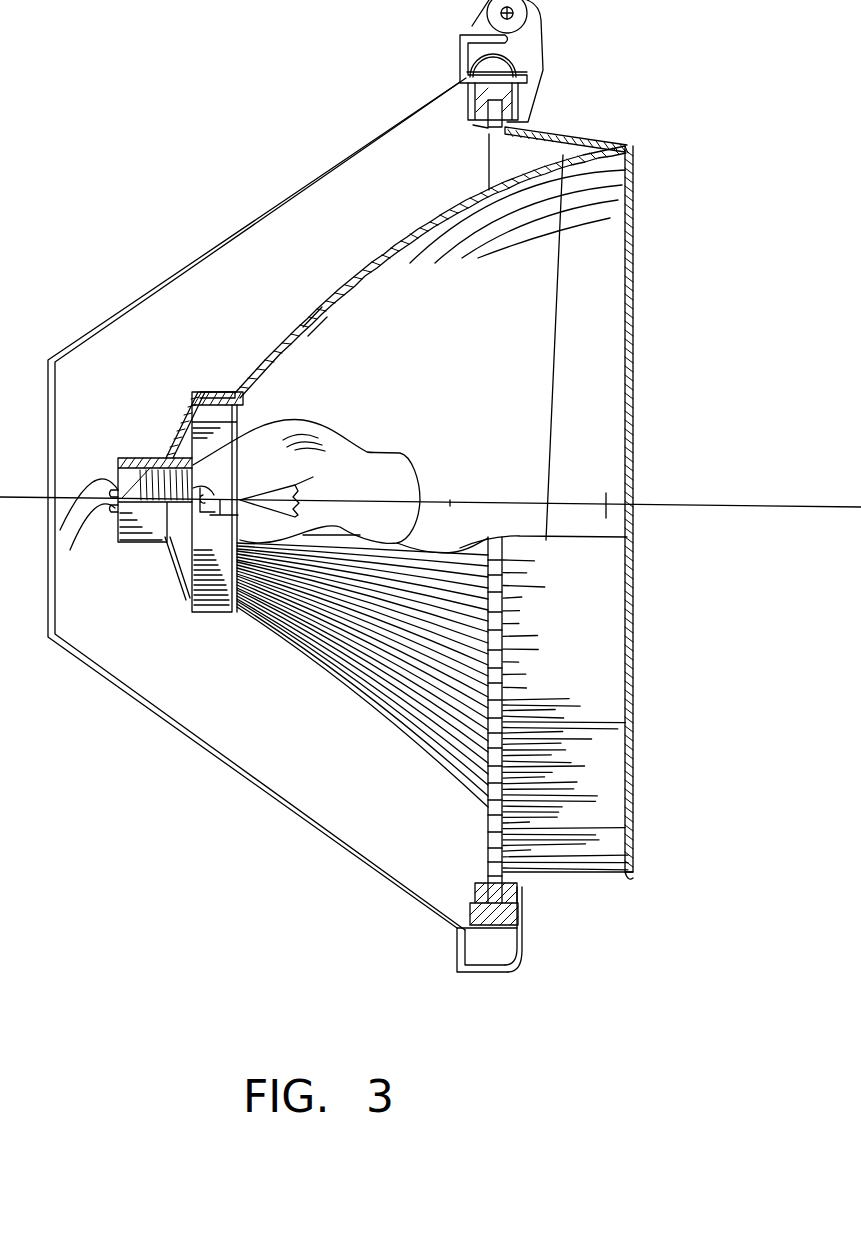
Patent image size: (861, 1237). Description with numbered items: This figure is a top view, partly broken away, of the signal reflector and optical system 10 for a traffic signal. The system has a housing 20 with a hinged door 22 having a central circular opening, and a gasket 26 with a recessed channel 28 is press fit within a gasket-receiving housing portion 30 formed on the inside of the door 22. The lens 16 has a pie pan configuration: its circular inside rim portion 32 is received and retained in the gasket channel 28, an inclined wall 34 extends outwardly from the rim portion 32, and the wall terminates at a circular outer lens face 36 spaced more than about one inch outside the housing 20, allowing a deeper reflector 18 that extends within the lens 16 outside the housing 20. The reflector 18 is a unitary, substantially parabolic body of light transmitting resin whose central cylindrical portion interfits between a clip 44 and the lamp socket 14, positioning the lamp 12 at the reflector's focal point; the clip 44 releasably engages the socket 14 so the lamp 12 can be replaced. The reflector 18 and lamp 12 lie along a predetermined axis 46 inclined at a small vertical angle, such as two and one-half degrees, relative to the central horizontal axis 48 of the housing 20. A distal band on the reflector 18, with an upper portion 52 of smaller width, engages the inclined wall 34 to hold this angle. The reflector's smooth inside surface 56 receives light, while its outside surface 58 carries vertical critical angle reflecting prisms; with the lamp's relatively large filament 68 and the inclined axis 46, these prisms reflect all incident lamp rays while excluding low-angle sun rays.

The signal reflector and optical system 10 is at (242, 112).
The lamp 12 is at (335, 428).
The lamp socket 14 is at (236, 413).
The lens 16 is at (634, 422).
The reflector 18 is at (368, 258).
The housing 20 is at (99, 340).
The hinged door 22 is at (528, 88).
The gasket 26 is at (483, 122).
The recessed channel 28 is at (514, 912).
The gasket-receiving housing portion 30 is at (496, 940).
The circular inside rim portion 32 is at (500, 750).
The inclined wall 34 is at (627, 878).
The outer lens face 36 is at (637, 748).
The clip 44 is at (185, 418).
The predetermined axis 46 is at (450, 500).
The central horizontal axis 48 is at (507, 500).
The upper portion 52 is at (593, 368).
The inside surface 56 is at (315, 318).
The outside surface 58 is at (320, 296).
The filament 68 is at (294, 495).